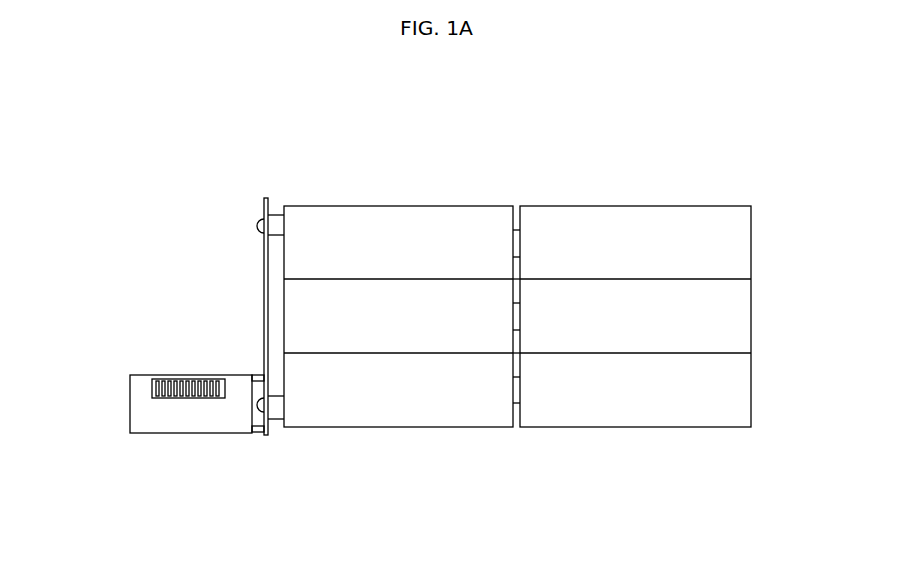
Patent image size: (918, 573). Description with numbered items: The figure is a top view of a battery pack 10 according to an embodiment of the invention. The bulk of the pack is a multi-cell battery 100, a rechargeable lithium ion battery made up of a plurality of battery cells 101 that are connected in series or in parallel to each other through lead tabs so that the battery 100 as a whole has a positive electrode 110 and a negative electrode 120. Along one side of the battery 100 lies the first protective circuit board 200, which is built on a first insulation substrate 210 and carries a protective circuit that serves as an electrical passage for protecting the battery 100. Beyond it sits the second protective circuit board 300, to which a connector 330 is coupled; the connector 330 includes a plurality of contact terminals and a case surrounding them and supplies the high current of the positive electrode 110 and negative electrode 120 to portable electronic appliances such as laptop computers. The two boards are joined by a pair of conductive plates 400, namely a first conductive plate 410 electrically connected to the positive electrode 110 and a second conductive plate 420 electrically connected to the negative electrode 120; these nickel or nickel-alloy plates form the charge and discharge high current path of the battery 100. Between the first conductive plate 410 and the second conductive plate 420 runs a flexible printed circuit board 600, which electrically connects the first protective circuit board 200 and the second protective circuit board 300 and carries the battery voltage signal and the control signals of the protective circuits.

The battery pack 10 is at (730, 113).
The multi-cell battery 100 is at (766, 217).
The battery cell 101 is at (626, 303).
The positive electrode 110 is at (277, 436).
The negative electrode 120 is at (277, 215).
The first protective circuit board 200 is at (252, 265).
The first insulation substrate 210 is at (263, 203).
The second protective circuit board 300 is at (116, 407).
The connector 330 is at (156, 389).
The conductive plates 400 is at (202, 402).
The first conductive plate 410 is at (257, 374).
The second conductive plate 420 is at (255, 434).
The flexible printed circuit board 600 is at (256, 407).